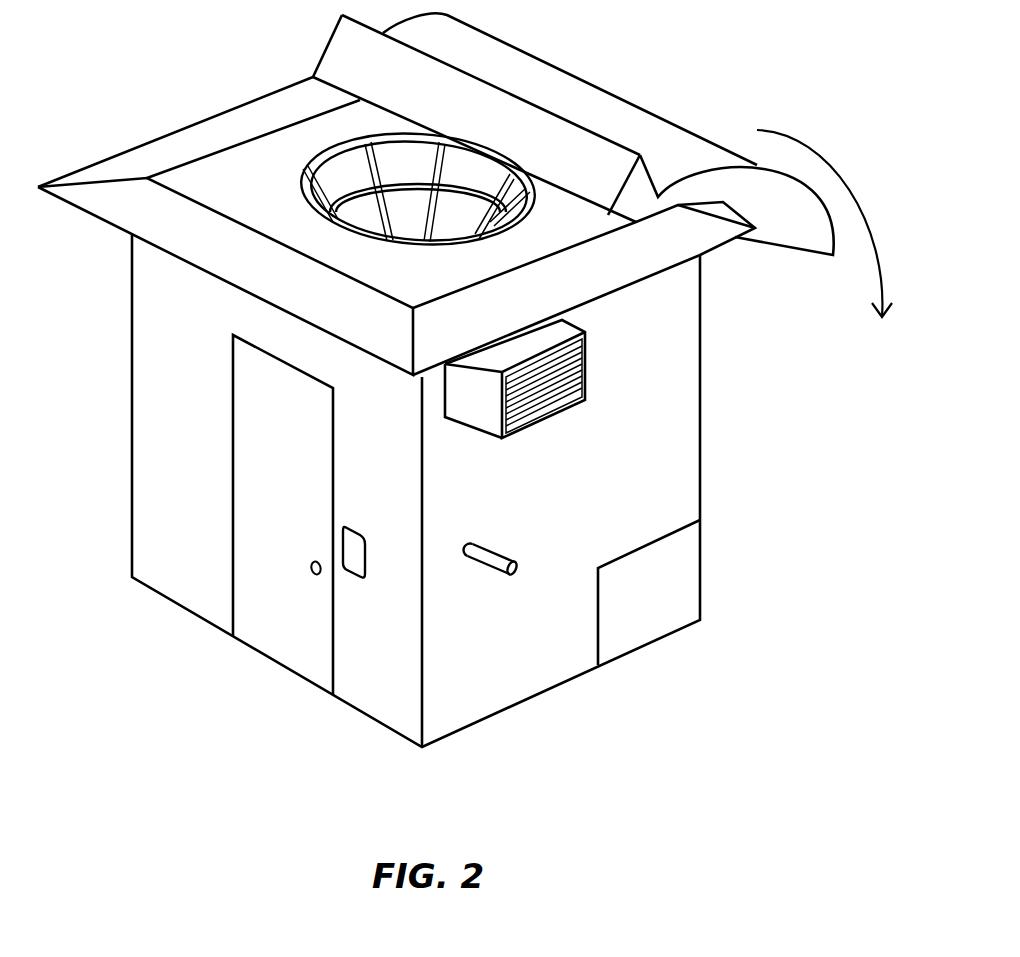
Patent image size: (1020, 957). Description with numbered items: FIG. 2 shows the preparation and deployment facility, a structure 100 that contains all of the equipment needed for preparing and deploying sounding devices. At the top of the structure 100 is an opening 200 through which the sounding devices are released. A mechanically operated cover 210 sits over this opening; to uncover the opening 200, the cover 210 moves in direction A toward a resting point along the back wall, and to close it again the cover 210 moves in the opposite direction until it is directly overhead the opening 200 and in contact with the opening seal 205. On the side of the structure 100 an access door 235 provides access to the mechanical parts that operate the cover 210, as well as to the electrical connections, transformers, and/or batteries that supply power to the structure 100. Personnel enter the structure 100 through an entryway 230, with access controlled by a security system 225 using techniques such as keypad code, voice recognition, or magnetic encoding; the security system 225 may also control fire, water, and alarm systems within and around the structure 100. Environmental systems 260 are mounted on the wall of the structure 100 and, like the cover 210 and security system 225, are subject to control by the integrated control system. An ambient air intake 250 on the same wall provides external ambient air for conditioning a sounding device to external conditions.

The structure 100 is at (128, 491).
The opening 200 is at (348, 178).
The opening seal 205 is at (305, 178).
The cover 210 is at (607, 103).
The security system 225 is at (353, 567).
The entryway 230 is at (273, 602).
The access door 235 is at (658, 607).
The ambient air intake 250 is at (492, 572).
The environmental systems 260 is at (589, 347).